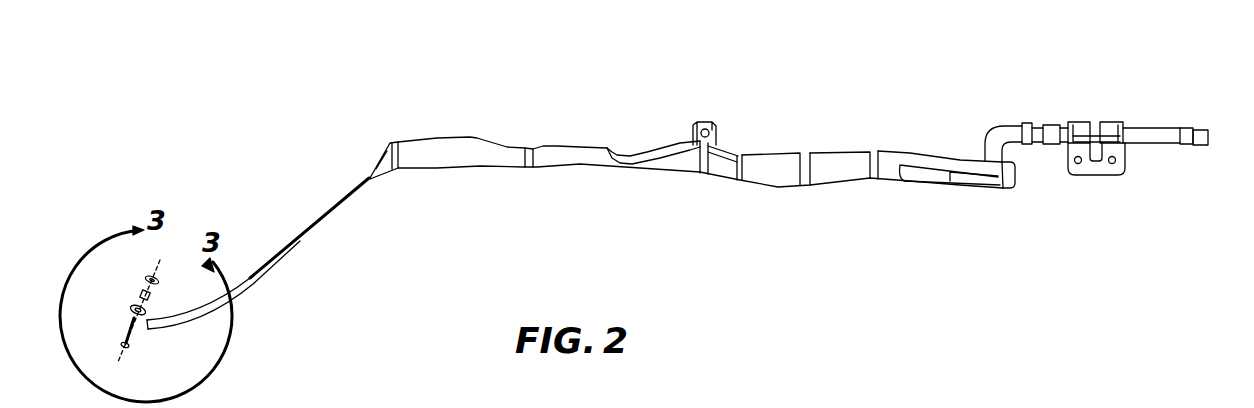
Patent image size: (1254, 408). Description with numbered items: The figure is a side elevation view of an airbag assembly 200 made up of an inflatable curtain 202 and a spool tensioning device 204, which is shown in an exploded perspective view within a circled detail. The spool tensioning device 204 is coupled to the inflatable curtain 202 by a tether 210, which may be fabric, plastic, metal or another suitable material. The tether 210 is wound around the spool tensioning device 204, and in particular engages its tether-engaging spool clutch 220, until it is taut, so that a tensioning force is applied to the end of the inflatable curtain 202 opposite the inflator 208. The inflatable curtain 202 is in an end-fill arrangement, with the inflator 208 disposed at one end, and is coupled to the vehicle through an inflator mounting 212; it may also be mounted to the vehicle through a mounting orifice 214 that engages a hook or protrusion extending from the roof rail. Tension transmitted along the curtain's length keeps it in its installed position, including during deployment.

The airbag assembly 200 is at (748, 105).
The inflatable curtain 202 is at (778, 187).
The spool tensioning device 204 is at (107, 295).
The inflator 208 is at (1153, 128).
The tether 210 is at (297, 238).
The inflator mounting 212 is at (1098, 167).
The mounting orifice 214 is at (717, 135).
The spool clutch 220 is at (861, 396).